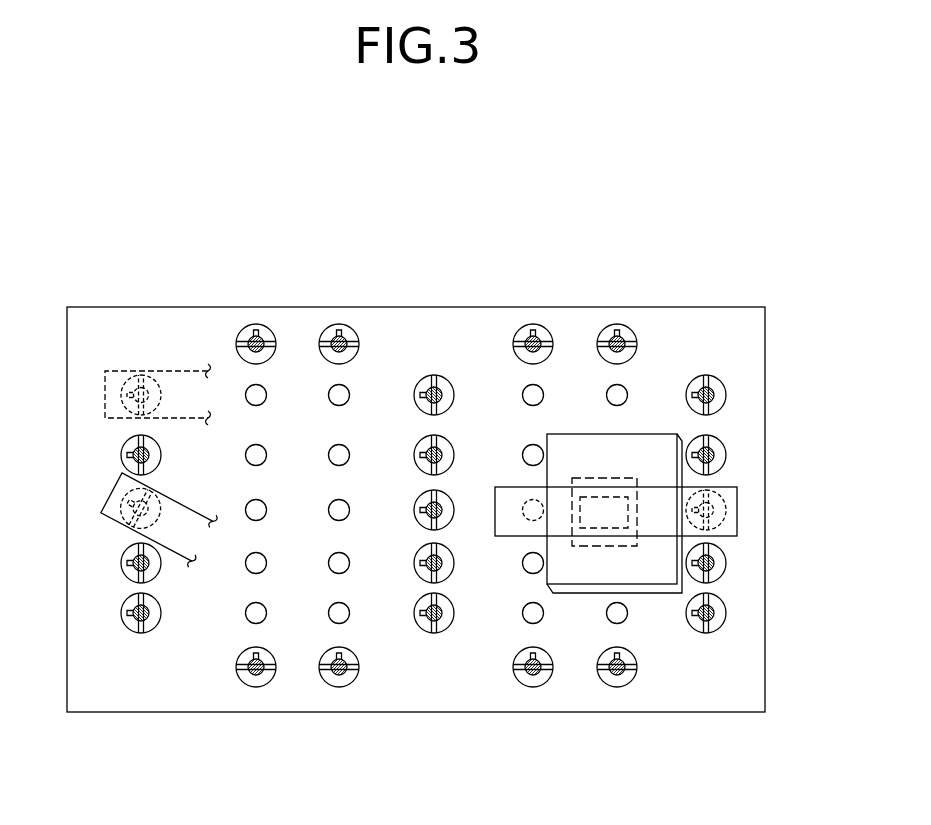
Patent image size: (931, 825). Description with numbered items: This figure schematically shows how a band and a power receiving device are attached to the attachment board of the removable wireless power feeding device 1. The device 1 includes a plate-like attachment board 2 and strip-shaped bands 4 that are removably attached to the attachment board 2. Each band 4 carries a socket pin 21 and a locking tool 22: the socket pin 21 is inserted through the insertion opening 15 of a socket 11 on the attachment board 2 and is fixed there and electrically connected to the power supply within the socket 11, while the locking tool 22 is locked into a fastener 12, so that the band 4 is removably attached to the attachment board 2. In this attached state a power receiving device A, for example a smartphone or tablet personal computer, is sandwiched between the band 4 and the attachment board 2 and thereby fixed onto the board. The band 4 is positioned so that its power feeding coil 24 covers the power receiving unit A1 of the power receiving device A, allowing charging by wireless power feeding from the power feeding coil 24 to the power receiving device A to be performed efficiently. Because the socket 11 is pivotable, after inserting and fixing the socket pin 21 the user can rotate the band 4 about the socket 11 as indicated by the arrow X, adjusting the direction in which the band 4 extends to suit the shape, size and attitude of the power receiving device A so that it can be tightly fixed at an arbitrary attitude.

The removable wireless power feeding device 1 is at (428, 250).
The attachment board 2 is at (291, 307).
The band 4 is at (421, 514).
The socket 11 is at (120, 533).
The fastener 12 is at (503, 553).
The locking tool 22 is at (523, 522).
The insertion opening 15 is at (773, 543).
The socket pin 21 is at (727, 531).
The power feeding coil 24 is at (587, 537).
The power receiving device A is at (648, 433).
The power receiving unit A1 is at (585, 476).
The arrow X is at (106, 543).